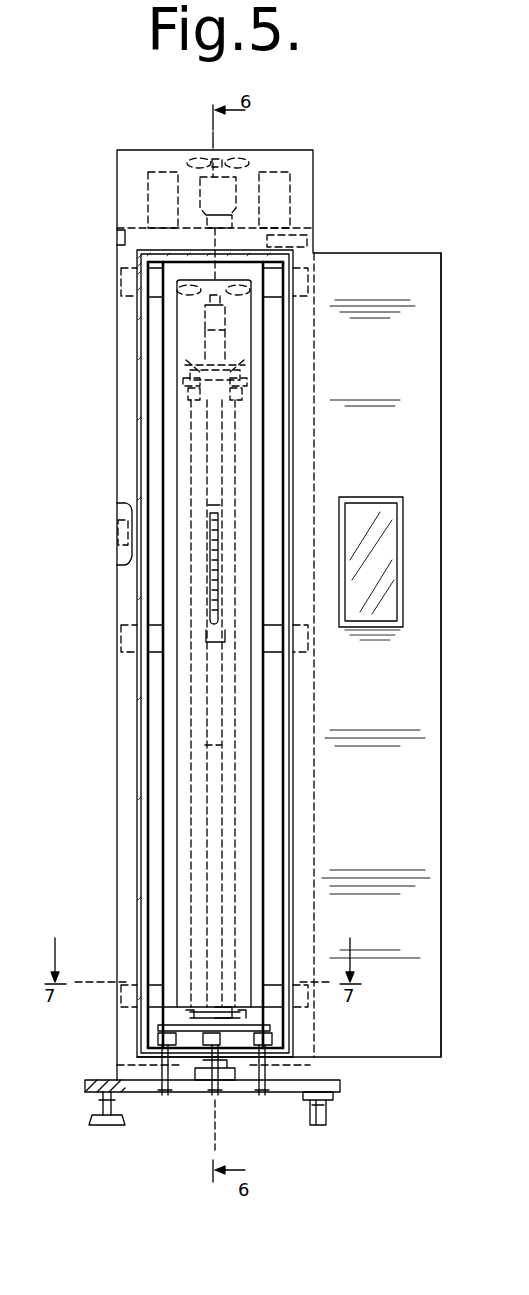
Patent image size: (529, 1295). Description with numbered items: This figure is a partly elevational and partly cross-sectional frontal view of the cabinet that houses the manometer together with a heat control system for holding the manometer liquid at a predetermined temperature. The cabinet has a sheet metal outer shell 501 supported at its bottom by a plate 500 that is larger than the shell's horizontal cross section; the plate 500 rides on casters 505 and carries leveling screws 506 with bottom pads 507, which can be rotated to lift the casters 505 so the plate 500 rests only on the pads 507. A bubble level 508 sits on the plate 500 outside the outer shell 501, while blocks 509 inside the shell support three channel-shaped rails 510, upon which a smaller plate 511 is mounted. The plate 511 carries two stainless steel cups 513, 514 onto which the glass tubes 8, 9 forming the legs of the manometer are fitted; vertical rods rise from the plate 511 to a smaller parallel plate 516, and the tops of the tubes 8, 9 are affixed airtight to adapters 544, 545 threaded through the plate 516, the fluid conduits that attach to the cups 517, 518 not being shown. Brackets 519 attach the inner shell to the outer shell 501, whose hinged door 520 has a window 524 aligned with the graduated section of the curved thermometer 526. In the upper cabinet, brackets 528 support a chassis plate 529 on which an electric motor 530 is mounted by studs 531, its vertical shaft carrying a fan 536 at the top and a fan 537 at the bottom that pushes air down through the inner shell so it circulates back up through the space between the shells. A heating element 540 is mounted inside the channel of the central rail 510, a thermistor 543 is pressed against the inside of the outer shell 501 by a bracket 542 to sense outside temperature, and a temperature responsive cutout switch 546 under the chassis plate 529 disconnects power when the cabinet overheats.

The glass tube 8 is at (200, 832).
The glass tube 9 is at (225, 806).
The plate 500 is at (145, 1085).
The outer shell 501 is at (117, 895).
The caster 505 is at (328, 1110).
The leveling screw 506 is at (99, 1101).
The bottom pad 507 is at (105, 1125).
The bubble level 508 is at (234, 1078).
The block 509 is at (117, 1062).
The rail 510 is at (158, 1040).
The plate 511 is at (272, 1028).
The stainless steel cup 513 is at (190, 1013).
The stainless steel cup 514 is at (232, 1012).
The plate 516 is at (240, 366).
The cup 517 is at (205, 400).
The cup 518 is at (230, 401).
The bracket 519 is at (120, 287).
The door 520 is at (441, 745).
The window 524 is at (375, 510).
The thermometer 526 is at (215, 540).
The bracket 528 is at (117, 232).
The chassis plate 529 is at (135, 257).
The electric motor 530 is at (240, 185).
The stud 531 is at (200, 222).
The fan 536 is at (240, 160).
The fan 537 is at (178, 300).
The heating element 540 is at (205, 1040).
The bracket 542 is at (117, 517).
The thermistor 543 is at (118, 545).
The adapter 544 is at (185, 376).
The adapter 545 is at (250, 380).
The temperature responsive cutout switch 546 is at (308, 242).